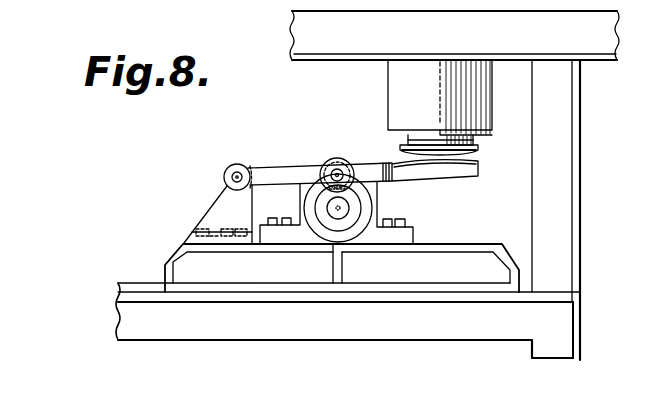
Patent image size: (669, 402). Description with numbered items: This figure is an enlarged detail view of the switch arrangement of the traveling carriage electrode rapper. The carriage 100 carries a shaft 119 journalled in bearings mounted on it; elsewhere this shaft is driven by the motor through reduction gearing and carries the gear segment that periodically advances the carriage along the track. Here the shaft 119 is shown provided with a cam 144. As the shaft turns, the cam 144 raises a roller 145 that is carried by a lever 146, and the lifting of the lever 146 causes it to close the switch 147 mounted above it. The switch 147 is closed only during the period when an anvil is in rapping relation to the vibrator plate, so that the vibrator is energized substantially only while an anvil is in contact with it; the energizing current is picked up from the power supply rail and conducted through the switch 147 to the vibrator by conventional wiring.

The carriage 100 is at (581, 251).
The shaft 119 is at (349, 204).
The cam 144 is at (327, 220).
The roller 145 is at (344, 152).
The lever 146 is at (271, 167).
The switch 147 is at (446, 109).